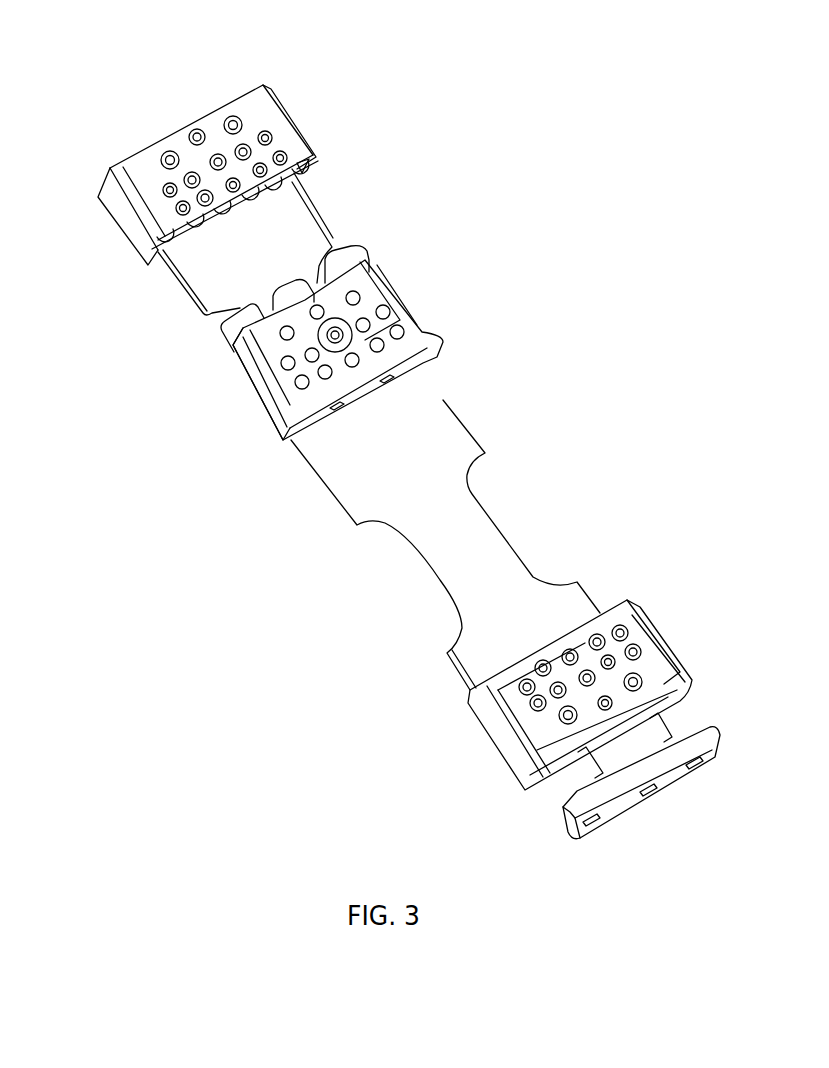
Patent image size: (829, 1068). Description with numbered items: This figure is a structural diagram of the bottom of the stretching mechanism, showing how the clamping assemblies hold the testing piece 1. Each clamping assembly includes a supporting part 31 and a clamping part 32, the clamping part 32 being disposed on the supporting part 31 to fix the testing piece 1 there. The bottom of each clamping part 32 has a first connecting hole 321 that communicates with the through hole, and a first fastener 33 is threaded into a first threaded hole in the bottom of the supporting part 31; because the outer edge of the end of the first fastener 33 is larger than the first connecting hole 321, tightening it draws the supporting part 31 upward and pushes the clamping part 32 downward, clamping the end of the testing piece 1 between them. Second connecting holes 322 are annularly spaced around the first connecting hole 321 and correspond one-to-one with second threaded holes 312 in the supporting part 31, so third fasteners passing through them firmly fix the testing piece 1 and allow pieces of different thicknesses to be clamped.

The testing piece 1 is at (455, 507).
The supporting part 31 is at (405, 346).
The second threaded hole 312 is at (350, 297).
The clamping part 32 is at (280, 128).
The first connecting hole 321 is at (198, 124).
The second connecting hole 322 is at (246, 134).
The first fastener 33 is at (258, 378).